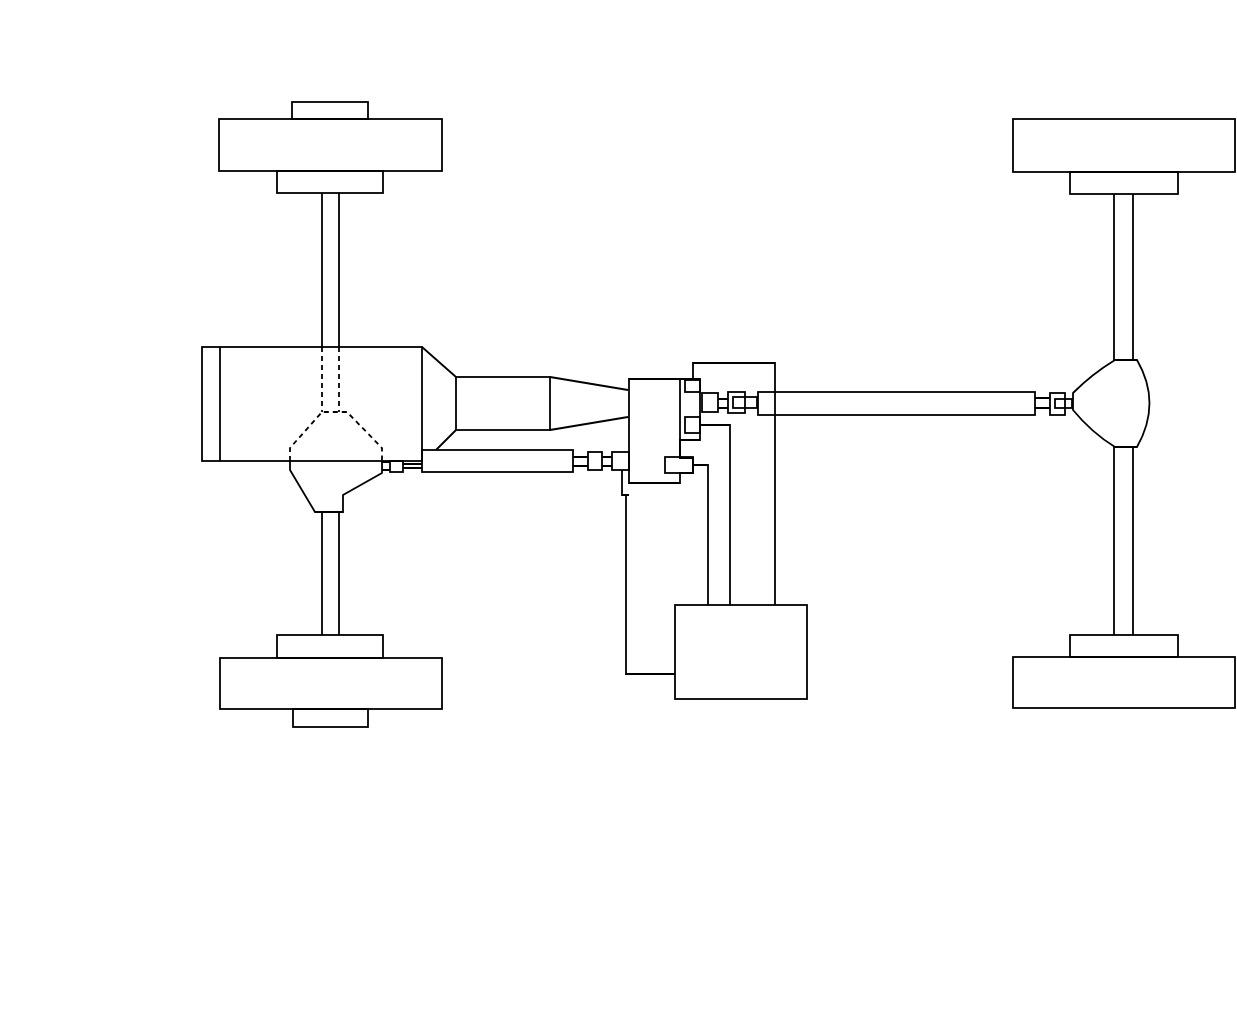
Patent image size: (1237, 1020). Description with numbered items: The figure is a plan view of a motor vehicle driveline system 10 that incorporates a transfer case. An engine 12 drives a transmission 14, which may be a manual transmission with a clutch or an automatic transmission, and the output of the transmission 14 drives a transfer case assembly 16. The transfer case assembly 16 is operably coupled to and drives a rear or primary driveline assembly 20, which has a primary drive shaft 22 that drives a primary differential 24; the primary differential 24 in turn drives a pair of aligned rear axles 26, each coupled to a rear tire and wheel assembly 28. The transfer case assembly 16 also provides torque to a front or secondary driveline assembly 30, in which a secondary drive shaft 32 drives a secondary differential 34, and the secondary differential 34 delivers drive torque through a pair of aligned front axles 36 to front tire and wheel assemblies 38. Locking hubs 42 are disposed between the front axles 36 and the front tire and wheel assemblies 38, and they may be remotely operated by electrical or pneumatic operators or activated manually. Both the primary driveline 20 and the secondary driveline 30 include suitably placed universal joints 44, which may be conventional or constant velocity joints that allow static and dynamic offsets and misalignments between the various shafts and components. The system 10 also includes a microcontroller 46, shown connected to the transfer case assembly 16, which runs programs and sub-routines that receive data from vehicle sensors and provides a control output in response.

The vehicle driveline system 10 is at (803, 148).
The engine 12 is at (238, 346).
The transmission 14 is at (500, 392).
The transfer case assembly 16 is at (665, 368).
The primary driveline assembly 20 is at (1060, 353).
The primary drive shaft 22 is at (905, 418).
The primary differential 24 is at (1130, 392).
The primary axles 26 is at (1127, 290).
The primary tire and wheel assembly 28 is at (1130, 119).
The secondary driveline assembly 30 is at (443, 282).
The secondary drive shaft 32 is at (518, 474).
The secondary differential 34 is at (310, 489).
The secondary axles 36 is at (333, 258).
The secondary tire and wheel assembly 38 is at (400, 119).
The locking hubs 42 is at (316, 101).
The universal joints 44 is at (740, 392).
The microcontroller 46 is at (725, 665).